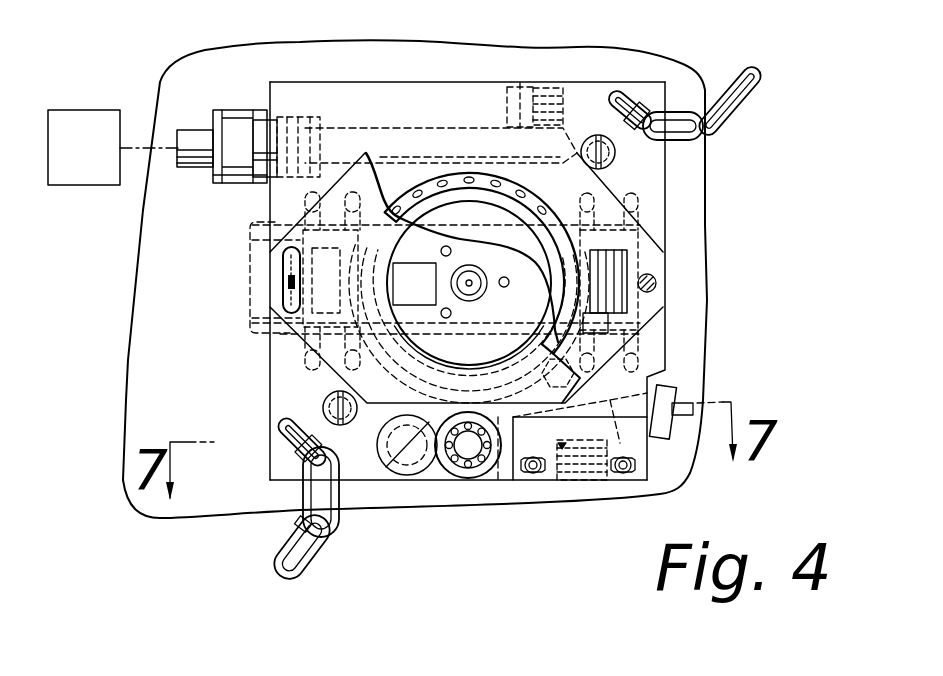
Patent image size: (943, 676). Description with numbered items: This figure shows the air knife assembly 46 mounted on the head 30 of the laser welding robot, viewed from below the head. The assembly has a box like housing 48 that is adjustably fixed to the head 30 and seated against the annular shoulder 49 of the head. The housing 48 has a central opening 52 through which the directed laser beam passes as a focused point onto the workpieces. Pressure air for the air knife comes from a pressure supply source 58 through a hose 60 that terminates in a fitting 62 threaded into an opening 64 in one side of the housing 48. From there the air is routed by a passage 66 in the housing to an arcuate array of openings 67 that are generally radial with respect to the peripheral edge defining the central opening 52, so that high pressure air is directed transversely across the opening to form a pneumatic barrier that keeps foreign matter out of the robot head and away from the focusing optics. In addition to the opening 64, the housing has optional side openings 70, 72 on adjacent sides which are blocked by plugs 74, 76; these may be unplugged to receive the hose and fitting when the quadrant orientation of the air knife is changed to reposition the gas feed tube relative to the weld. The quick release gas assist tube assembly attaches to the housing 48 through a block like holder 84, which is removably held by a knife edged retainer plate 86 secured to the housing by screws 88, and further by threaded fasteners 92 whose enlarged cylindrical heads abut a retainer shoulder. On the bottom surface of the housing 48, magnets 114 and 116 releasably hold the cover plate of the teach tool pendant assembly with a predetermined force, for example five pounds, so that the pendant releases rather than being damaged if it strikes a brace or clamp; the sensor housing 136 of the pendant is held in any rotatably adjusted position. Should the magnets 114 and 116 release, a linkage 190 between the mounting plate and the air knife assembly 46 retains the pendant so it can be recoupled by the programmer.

The head 30 is at (680, 73).
The air knife assembly 46 is at (232, 287).
The box like housing 48 is at (268, 380).
The annular shoulder 49 is at (667, 163).
The central opening 52 is at (548, 262).
The pressure supply source 58 is at (85, 122).
The hose 60 is at (132, 112).
The fitting 62 is at (240, 113).
The opening 64 is at (313, 120).
The passage 66 is at (367, 135).
The openings 67 is at (441, 181).
The side opening 70 is at (557, 88).
The side opening 72 is at (596, 470).
The plug 74 is at (521, 83).
The plug 76 is at (573, 470).
The block like holder 84 is at (473, 486).
The knife edged retainer plate 86 is at (524, 480).
The screws 88 is at (625, 468).
The threaded fasteners 92 is at (404, 476).
The magnet 114 is at (613, 272).
The magnet 116 is at (283, 253).
The sensor housing 136 is at (253, 307).
The linkage 190 is at (757, 92).